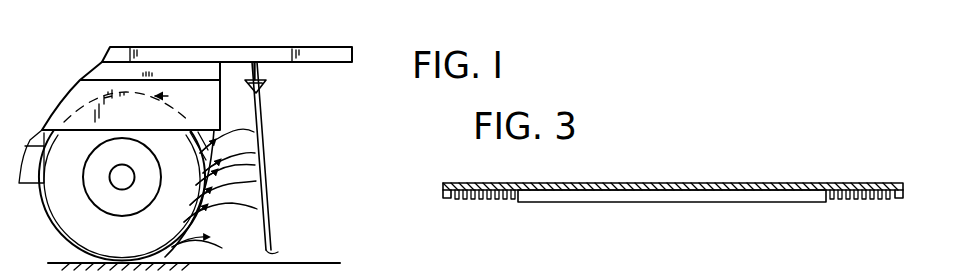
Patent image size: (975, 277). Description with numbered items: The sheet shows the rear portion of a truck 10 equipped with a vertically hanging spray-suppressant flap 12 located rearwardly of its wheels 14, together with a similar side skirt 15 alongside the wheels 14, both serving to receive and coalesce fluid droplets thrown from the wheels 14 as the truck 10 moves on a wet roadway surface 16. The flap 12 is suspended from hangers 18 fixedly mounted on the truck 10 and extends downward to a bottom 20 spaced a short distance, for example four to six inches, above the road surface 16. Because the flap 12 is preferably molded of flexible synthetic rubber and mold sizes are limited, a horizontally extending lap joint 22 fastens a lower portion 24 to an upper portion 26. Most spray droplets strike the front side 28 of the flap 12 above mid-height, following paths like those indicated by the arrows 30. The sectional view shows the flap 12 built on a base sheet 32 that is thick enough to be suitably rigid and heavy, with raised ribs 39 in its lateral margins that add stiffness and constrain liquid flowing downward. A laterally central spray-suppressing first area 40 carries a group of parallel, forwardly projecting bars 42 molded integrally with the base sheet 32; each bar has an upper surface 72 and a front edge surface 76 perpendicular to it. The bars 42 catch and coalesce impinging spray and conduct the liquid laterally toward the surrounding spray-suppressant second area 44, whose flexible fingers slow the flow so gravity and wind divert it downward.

In FIG. 1, the truck 10 is at (352, 58).
In FIG. 1, the spray-suppressant flap 12 is at (266, 103).
In FIG. 3, the spray-suppressant flap 12 is at (728, 178).
In FIG. 1, the wheels 14 is at (70, 235).
In FIG. 1, the side skirt 15 is at (191, 102).
In FIG. 1, the roadway surface 16 is at (312, 262).
In FIG. 1, the hangers 18 is at (258, 68).
In FIG. 1, the bottom of the flap 20 is at (272, 251).
In FIG. 1, the lap joint 22 is at (262, 188).
In FIG. 1, the lower portion 24 is at (266, 220).
In FIG. 1, the upper portion 26 is at (262, 118).
In FIG. 1, the front side 28 is at (254, 108).
In FIG. 1, the arrows 30 is at (278, 156).
In FIG. 3, the base sheet 32 is at (613, 183).
In FIG. 3, the raised ribs 39 is at (897, 199).
In FIG. 3, the spray-suppressing first area 40 is at (566, 203).
In FIG. 3, the bars 42 is at (770, 203).
In FIG. 3, the spray-suppressant second area 44 is at (853, 201).
In FIG. 3, the upper surface 72 is at (705, 203).
In FIG. 3, the front edge surface 76 is at (630, 203).